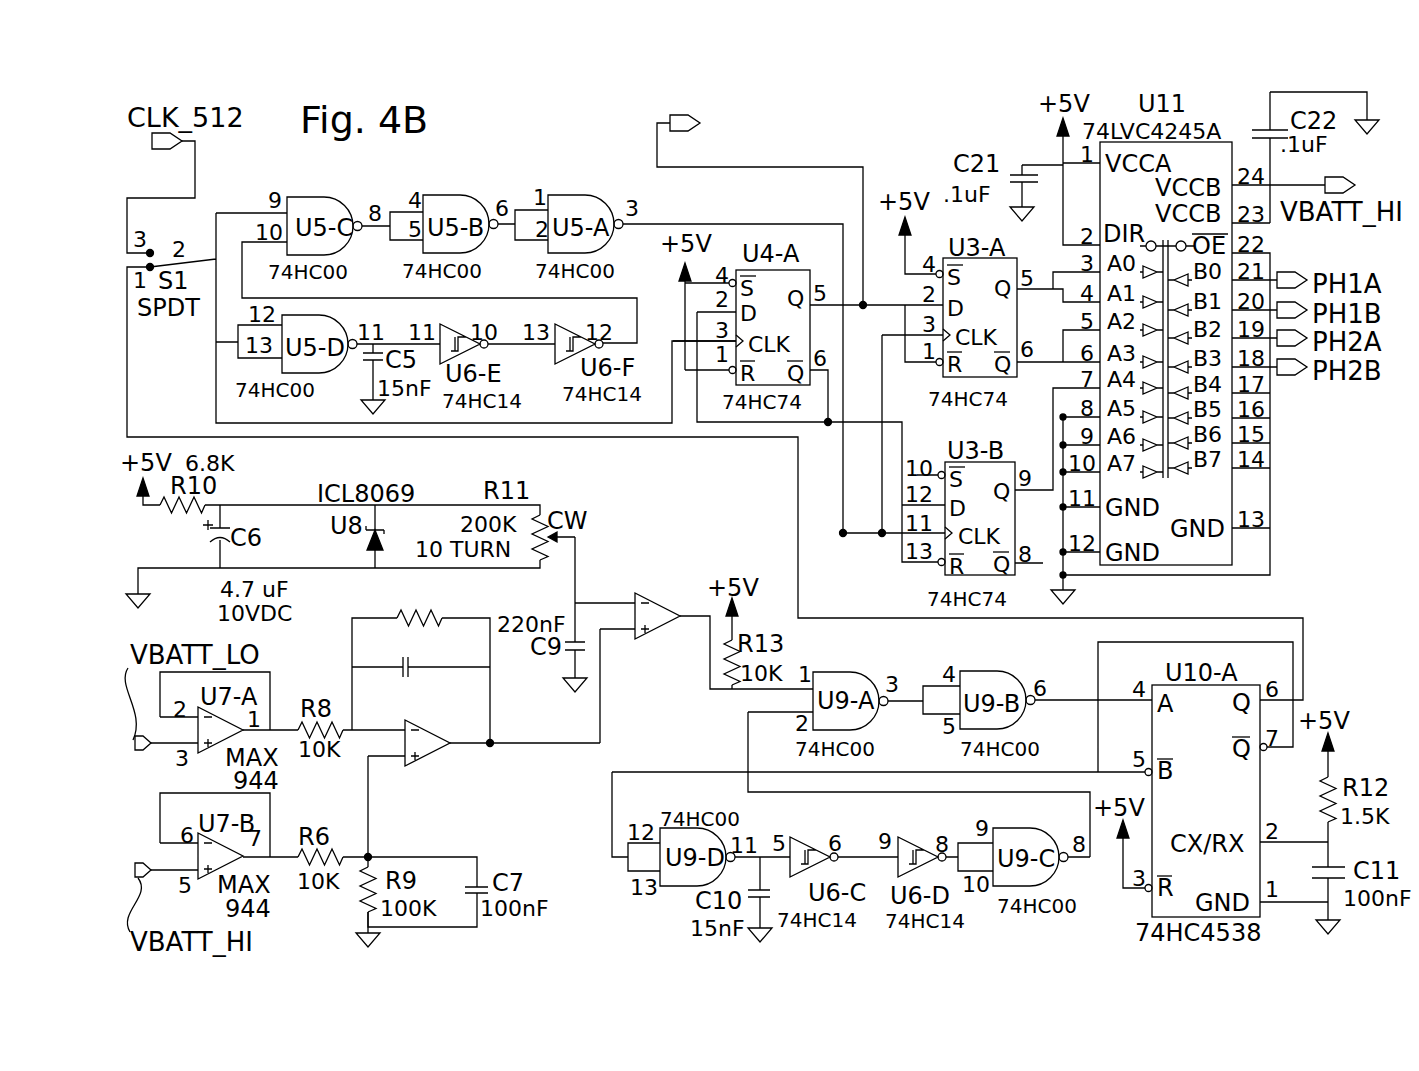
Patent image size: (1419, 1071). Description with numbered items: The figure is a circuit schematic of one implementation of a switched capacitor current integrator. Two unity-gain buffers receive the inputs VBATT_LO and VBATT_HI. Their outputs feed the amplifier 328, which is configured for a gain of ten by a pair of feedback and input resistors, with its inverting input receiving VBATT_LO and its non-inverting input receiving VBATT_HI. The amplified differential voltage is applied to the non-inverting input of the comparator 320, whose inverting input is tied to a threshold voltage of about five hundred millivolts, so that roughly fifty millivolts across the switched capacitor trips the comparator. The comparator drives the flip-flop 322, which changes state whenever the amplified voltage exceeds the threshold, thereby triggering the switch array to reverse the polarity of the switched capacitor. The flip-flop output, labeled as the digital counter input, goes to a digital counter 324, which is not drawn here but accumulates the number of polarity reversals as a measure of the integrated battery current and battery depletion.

The comparator 320 is at (665, 564).
The flip-flop 322 is at (720, 259).
The digital counter 324 is at (650, 133).
The amplifier 328 is at (454, 749).